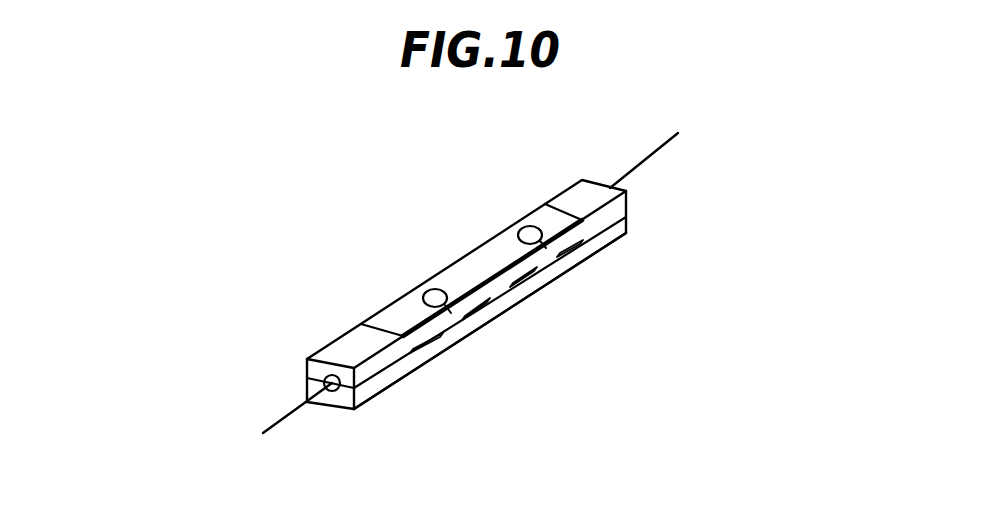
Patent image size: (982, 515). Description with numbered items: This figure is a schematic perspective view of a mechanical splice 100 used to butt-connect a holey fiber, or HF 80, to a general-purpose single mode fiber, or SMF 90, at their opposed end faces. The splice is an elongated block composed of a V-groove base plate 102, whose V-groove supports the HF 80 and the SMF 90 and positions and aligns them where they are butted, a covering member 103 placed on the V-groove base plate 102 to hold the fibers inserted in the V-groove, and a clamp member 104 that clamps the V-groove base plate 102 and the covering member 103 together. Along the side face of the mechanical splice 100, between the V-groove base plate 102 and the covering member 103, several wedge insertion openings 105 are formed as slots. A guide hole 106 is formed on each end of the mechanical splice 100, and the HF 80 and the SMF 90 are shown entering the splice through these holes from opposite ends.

The mechanical splice 100 is at (325, 180).
The V-groove base plate 102 is at (440, 353).
The covering member 103 is at (578, 202).
The clamp member 104 is at (491, 251).
The wedge insertion opening 105 is at (540, 283).
The guide hole 106 is at (308, 358).
The holey fiber 80 is at (295, 413).
The single mode fiber 90 is at (637, 168).